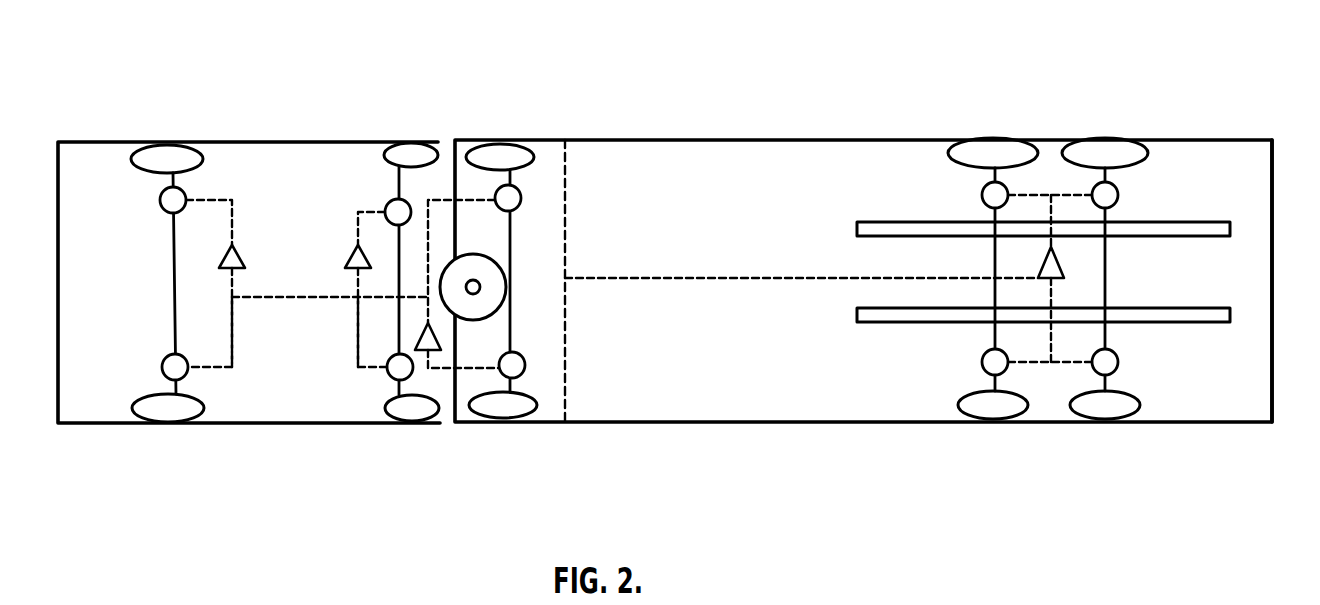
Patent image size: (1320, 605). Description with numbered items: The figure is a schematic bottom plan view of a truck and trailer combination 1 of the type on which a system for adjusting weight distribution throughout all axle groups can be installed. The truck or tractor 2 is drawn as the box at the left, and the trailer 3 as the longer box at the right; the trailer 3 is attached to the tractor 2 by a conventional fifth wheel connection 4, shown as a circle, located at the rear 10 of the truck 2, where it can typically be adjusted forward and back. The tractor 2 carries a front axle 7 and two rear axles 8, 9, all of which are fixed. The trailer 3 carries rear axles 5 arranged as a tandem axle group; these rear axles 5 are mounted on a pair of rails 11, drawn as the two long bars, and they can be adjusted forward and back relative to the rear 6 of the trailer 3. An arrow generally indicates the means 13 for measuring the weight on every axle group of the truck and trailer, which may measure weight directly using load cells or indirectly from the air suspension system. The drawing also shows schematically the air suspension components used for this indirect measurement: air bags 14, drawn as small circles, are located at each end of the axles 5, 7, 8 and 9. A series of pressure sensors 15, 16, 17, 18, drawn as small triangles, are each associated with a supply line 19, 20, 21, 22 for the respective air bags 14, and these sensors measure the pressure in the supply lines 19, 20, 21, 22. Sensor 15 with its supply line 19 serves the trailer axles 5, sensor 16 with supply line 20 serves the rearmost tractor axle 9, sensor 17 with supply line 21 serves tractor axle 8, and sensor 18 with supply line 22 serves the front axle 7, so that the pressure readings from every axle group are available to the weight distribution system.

The truck and trailer combination 1 is at (665, 220).
The truck or tractor 2 is at (267, 141).
The trailer 3 is at (723, 139).
The fifth wheel connection 4 is at (500, 289).
The rear axles 5 is at (1000, 147).
The rear of trailer 6 is at (1268, 317).
The front axle of tractor 7 is at (165, 150).
The rear axle of tractor 8 is at (417, 150).
The rear axle of tractor 9 is at (507, 147).
The rear of truck 10 is at (567, 180).
The rails 11 is at (875, 223).
The means for measuring weight 13 is at (960, 186).
The air bags 14 is at (186, 196).
The pressure sensor 15 is at (1058, 262).
The pressure sensor 16 is at (437, 335).
The pressure sensor 17 is at (352, 262).
The pressure sensor 18 is at (237, 264).
The supply line 19 is at (862, 278).
The supply line 20 is at (428, 234).
The supply line 21 is at (358, 333).
The supply line 22 is at (233, 333).